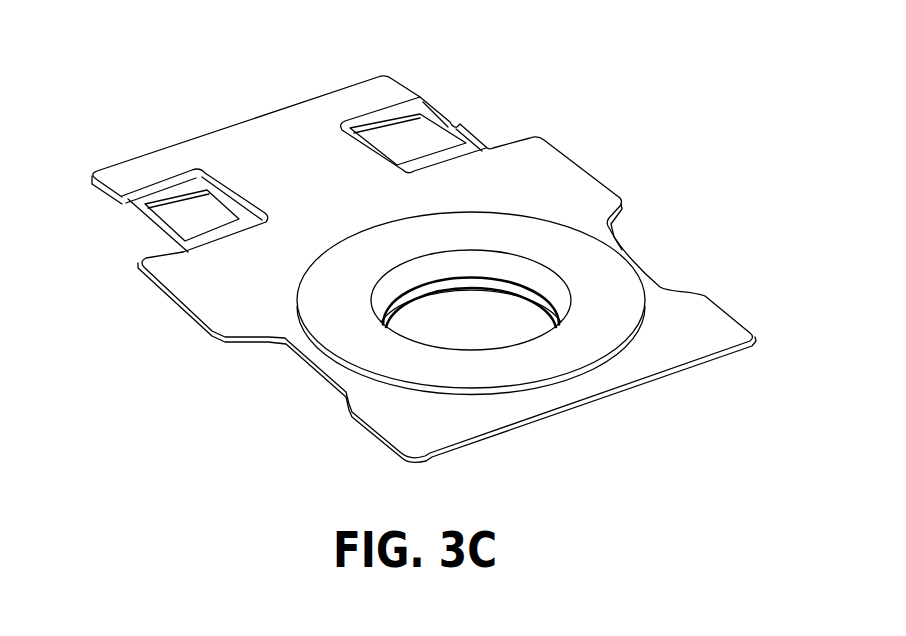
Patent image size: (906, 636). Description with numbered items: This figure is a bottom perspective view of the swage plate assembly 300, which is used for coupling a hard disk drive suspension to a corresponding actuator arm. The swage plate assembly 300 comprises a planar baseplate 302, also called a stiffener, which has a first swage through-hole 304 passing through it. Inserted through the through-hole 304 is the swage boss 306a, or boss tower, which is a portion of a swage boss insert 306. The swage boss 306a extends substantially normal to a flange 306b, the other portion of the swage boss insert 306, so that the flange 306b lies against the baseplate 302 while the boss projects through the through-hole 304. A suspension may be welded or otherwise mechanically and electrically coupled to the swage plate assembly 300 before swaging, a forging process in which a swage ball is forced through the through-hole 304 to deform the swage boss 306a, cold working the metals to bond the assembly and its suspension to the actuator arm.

The swage plate assembly 300 is at (410, 239).
The planar baseplate 302 is at (193, 293).
The first swage through-hole 304 is at (490, 331).
The swage boss insert 306 is at (511, 266).
The swage boss 306a is at (497, 261).
The flange 306b is at (567, 363).